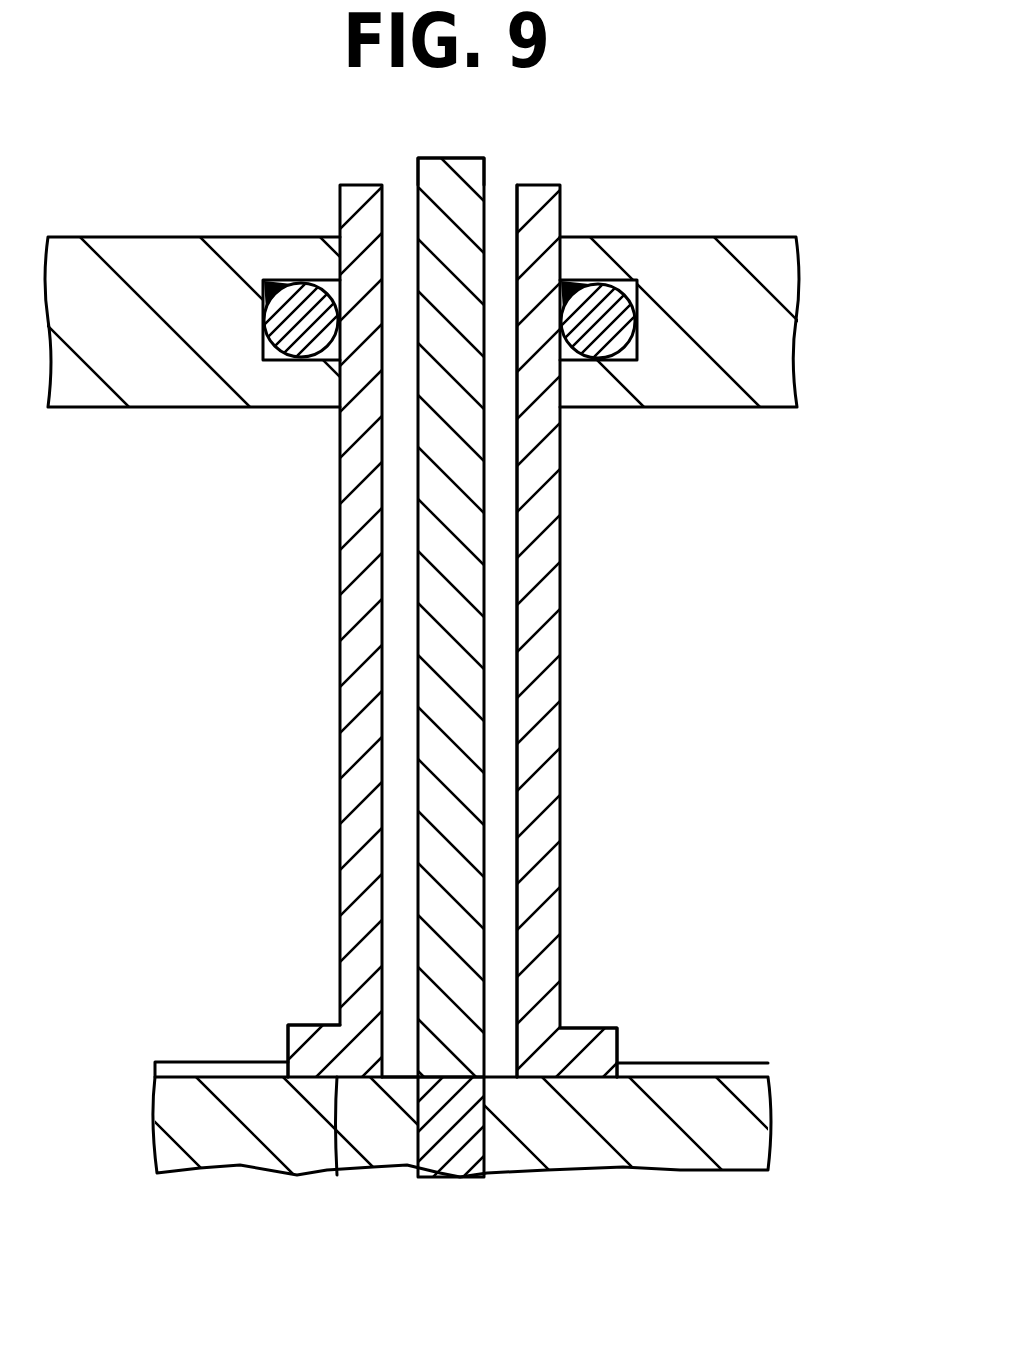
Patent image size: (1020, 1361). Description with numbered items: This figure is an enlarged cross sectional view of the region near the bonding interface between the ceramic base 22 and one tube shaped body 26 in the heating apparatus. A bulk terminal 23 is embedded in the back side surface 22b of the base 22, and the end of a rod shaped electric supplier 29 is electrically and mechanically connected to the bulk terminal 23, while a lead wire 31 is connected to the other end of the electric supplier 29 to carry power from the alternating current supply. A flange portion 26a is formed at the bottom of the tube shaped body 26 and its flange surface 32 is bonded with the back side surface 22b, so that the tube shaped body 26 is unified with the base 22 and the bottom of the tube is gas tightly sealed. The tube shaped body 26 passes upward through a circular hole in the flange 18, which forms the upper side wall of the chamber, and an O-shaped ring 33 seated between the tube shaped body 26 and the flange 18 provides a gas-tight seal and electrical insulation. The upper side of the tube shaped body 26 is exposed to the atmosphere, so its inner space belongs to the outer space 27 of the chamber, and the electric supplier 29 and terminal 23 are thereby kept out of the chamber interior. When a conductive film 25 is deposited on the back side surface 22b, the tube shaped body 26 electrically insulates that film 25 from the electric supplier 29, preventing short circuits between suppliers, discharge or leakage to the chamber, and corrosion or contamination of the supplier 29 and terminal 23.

The flange 18 is at (787, 352).
The base 22 is at (743, 1130).
The back side surface 22b is at (403, 1075).
The bulk terminal 23 is at (462, 1162).
The conductive film 25 is at (758, 1066).
The tube shaped body 26 is at (552, 575).
The flange portion 26a is at (607, 1040).
The outer space 27 is at (530, 868).
The electric supplier 29 is at (498, 808).
The lead wire 31 is at (448, 158).
The flange surface 32 is at (337, 1175).
The O-shaped ring 33 is at (612, 420).